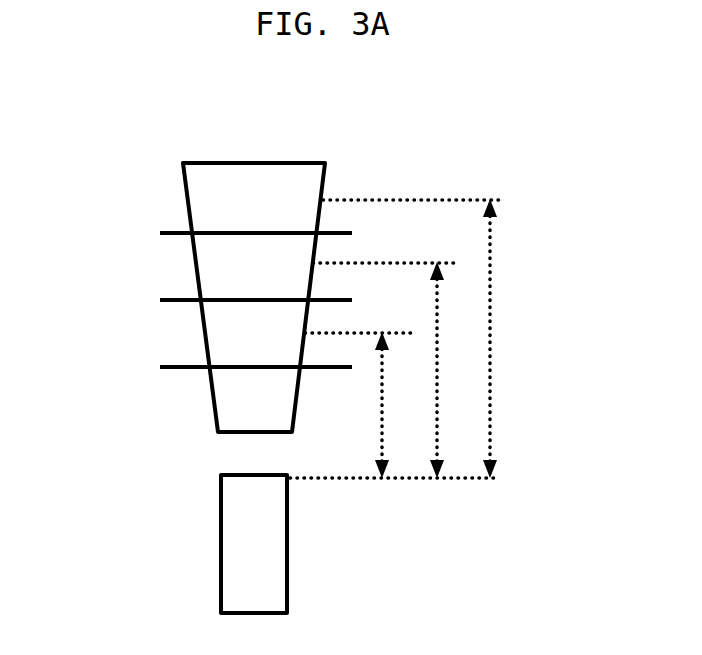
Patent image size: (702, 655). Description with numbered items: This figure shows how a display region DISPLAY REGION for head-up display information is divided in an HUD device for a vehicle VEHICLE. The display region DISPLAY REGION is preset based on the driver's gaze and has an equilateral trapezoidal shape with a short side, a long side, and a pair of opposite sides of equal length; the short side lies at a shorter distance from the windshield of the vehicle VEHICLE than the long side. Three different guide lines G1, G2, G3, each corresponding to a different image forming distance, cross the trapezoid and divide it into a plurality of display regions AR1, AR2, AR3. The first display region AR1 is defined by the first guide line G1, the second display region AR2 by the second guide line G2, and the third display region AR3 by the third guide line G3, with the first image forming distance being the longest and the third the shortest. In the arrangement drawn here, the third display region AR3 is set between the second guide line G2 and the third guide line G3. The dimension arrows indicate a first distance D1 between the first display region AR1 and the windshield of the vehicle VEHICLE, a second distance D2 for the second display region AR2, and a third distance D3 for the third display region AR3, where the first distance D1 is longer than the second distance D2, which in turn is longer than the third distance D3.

The display region DISPLAY REGION is at (270, 142).
The first guide line G1 is at (232, 235).
The second guide line G2 is at (233, 302).
The third guide line G3 is at (235, 370).
The first display region AR1 is at (366, 198).
The second display region AR2 is at (345, 266).
The third display region AR3 is at (323, 341).
The first distance D1 is at (477, 338).
The second distance D2 is at (422, 370).
The third distance D3 is at (368, 405).
The vehicle VEHICLE is at (380, 517).